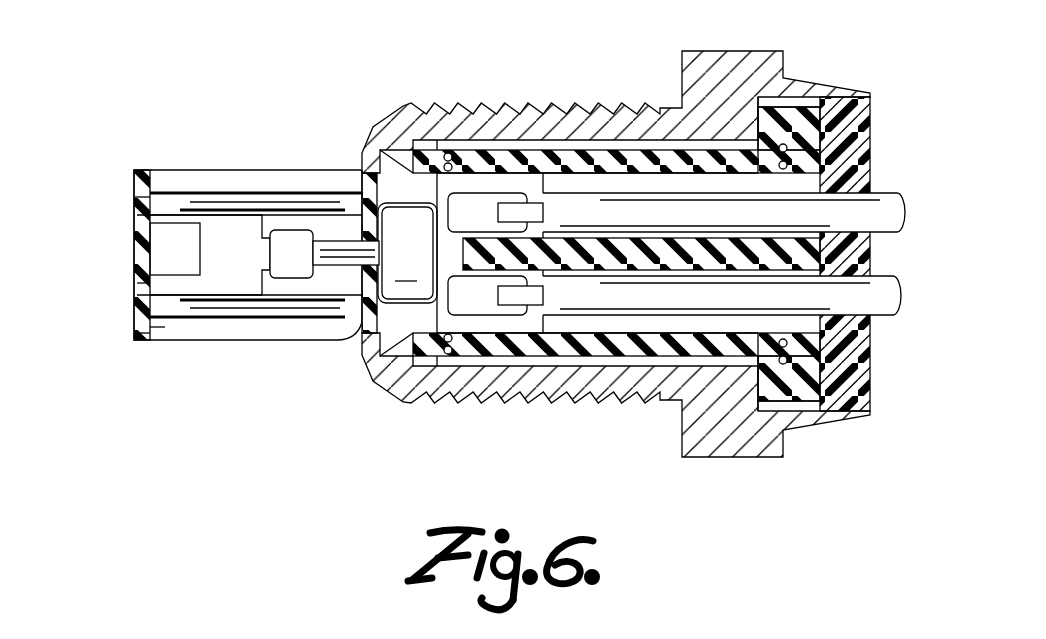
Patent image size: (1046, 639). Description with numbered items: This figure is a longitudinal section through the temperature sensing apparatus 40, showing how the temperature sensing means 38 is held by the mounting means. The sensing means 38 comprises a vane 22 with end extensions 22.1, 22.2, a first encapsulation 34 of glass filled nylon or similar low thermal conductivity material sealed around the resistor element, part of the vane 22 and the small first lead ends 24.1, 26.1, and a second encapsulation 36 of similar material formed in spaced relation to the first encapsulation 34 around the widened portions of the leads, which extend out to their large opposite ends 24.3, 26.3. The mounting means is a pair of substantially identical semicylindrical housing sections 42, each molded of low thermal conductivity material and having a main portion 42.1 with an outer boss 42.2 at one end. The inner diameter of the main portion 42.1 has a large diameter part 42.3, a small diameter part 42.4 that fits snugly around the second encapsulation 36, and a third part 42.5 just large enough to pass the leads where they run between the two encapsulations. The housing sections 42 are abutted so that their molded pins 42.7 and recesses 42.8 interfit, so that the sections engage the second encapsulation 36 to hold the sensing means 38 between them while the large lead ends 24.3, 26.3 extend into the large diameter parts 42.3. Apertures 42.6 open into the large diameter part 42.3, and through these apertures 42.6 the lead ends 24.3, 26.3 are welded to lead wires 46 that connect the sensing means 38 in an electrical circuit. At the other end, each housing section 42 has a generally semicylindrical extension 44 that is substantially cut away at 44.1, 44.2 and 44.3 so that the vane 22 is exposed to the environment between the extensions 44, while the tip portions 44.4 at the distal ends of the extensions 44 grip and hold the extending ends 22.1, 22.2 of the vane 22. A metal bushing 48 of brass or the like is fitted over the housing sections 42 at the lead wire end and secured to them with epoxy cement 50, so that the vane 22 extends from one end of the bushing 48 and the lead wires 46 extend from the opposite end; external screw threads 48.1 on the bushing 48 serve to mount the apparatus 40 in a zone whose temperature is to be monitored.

The vane 22 is at (236, 283).
The end extension 22.1 is at (137, 218).
The end extension 22.2 is at (137, 284).
The first lead end 24.1 is at (300, 250).
The opposite lead end 24.3 is at (473, 212).
The first lead end 26.1 is at (343, 285).
The opposite lead end 26.3 is at (512, 300).
The first encapsulation 34 is at (292, 240).
The second encapsulation 36 is at (407, 253).
The temperature sensing means 38 is at (283, 297).
The temperature sensing apparatus 40 is at (664, 62).
The housing section 42 is at (362, 140).
The main portion 42.1 is at (560, 148).
The outer boss 42.2 is at (818, 108).
The large diameter part 42.3 is at (610, 182).
The small diameter part 42.4 is at (404, 196).
The third inner part 42.5 is at (370, 178).
The aperture 42.6 is at (512, 232).
The pin 42.7 is at (790, 117).
The recess 42.8 is at (787, 150).
The housing extension 44 is at (147, 162).
The cut away portion 44.1 is at (284, 215).
The cut away portion 44.2 is at (158, 198).
The cut away portion 44.3 is at (150, 333).
The tip portion 44.4 is at (133, 197).
The lead wire 46 is at (903, 194).
The metal bushing 48 is at (747, 44).
The external screw threads 48.1 is at (473, 210).
The epoxy cement 50 is at (852, 158).